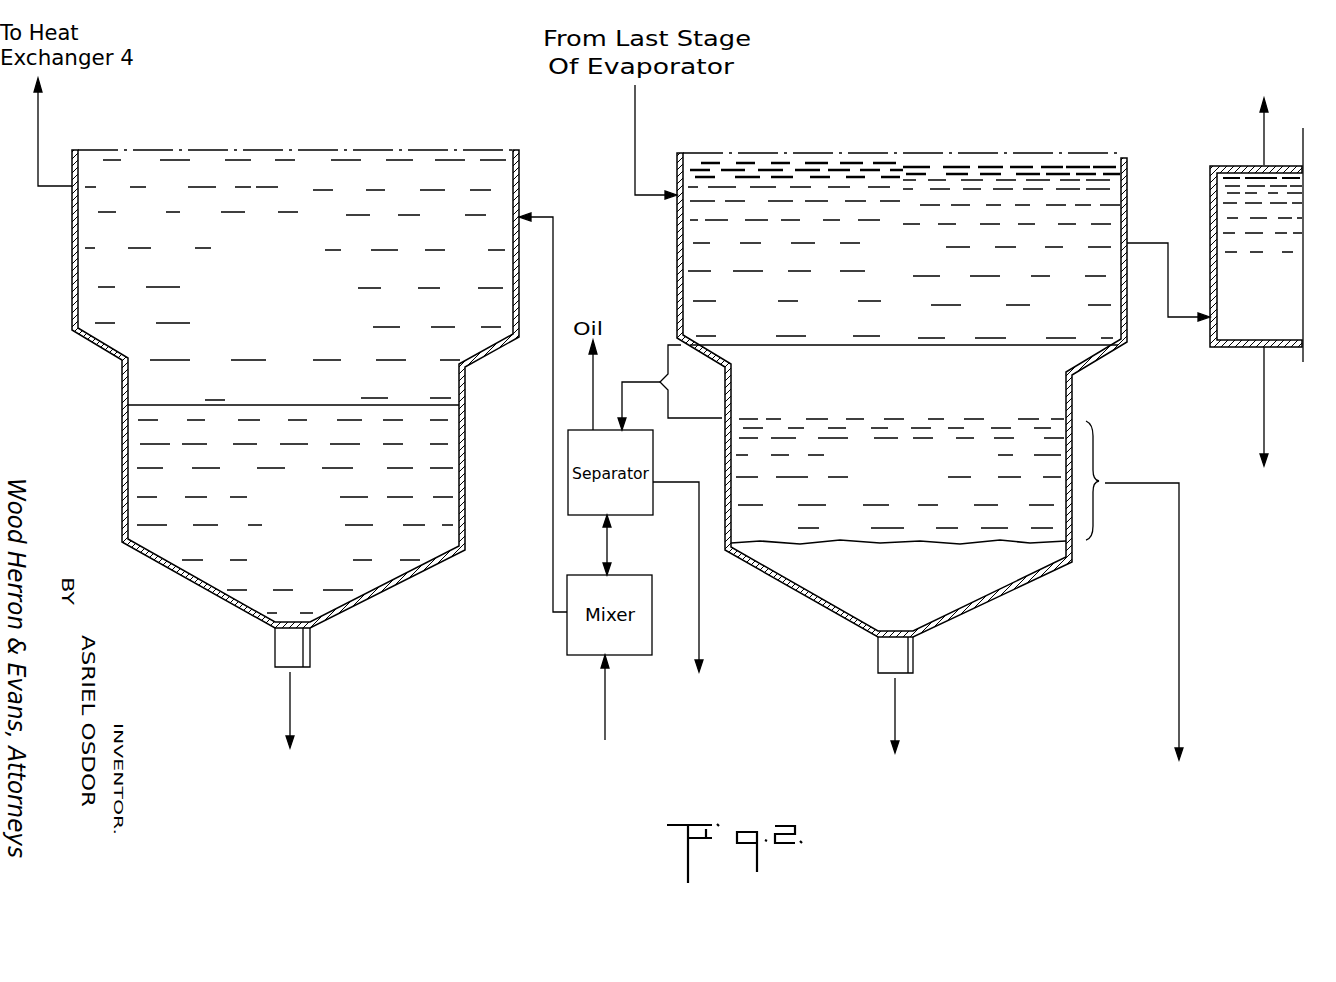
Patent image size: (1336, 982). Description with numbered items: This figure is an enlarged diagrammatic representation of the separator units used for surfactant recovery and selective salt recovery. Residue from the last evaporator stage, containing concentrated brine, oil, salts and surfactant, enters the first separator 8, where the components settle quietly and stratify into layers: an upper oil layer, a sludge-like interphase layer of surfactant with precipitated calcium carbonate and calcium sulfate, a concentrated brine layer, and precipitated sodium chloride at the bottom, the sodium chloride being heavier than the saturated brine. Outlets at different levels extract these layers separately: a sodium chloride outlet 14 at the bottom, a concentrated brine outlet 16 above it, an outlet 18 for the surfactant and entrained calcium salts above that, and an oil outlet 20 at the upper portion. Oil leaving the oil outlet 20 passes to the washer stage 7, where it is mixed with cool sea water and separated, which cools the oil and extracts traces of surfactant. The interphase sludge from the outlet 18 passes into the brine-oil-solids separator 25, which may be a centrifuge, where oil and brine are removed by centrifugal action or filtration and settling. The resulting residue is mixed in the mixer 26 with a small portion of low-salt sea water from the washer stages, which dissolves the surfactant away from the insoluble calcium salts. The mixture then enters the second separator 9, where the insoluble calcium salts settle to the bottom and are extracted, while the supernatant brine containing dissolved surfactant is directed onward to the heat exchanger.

The washer stage 7 is at (1225, 163).
The first separator 8 is at (1065, 117).
The second separator 9 is at (360, 140).
The sodium chloride outlet 14 is at (913, 665).
The concentrated brine outlet 16 is at (1098, 472).
The outlet for surfactant and entrained materials 18 is at (707, 405).
The oil outlet 20 is at (1128, 243).
The brine-oil-solids separator 25 is at (657, 516).
The mixer 26 is at (567, 648).